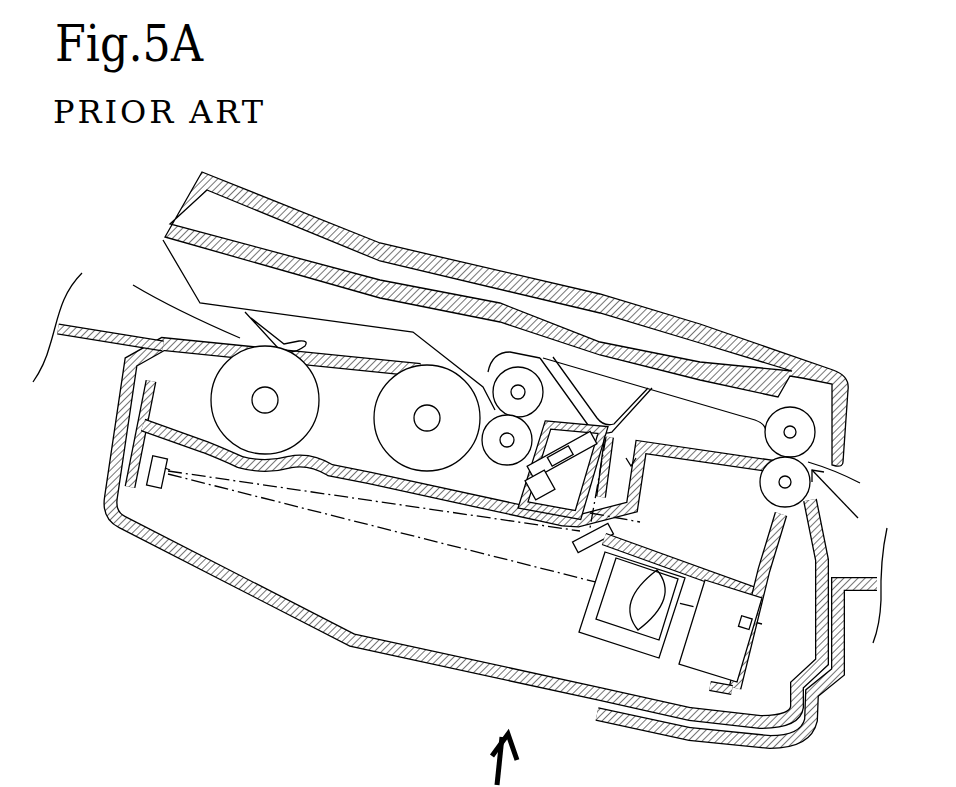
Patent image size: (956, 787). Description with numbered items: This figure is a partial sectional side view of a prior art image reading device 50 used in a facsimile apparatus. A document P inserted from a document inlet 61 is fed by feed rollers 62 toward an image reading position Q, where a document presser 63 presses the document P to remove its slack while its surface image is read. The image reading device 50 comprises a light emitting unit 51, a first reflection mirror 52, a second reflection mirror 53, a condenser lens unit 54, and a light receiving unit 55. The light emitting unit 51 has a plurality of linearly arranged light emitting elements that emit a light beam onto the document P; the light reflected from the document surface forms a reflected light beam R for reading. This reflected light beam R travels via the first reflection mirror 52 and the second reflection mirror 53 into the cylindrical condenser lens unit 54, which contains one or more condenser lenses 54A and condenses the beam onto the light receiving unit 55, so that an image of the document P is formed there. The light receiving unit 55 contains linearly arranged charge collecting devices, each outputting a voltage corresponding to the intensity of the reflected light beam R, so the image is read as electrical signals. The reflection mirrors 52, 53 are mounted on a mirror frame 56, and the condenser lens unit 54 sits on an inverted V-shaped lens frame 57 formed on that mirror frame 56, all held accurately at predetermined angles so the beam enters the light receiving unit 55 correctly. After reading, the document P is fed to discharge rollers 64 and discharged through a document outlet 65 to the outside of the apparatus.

The image reading device 50 is at (384, 665).
The light emitting unit 51 is at (533, 485).
The first reflection mirror 52 is at (580, 540).
The second reflection mirror 53 is at (171, 488).
The condenser lens unit 54 is at (603, 620).
The condenser lens 54A is at (643, 628).
The light receiving unit 55 is at (740, 622).
The mirror frame 56 is at (687, 560).
The lens frame 57 is at (593, 605).
The document inlet 61 is at (205, 336).
The feed rollers 62 is at (390, 423).
The document presser 63 is at (649, 402).
The discharge rollers 64 is at (796, 433).
The document outlet 65 is at (850, 504).
The document P is at (147, 293).
The image reading position Q is at (638, 465).
The reflected light beam R is at (346, 494).